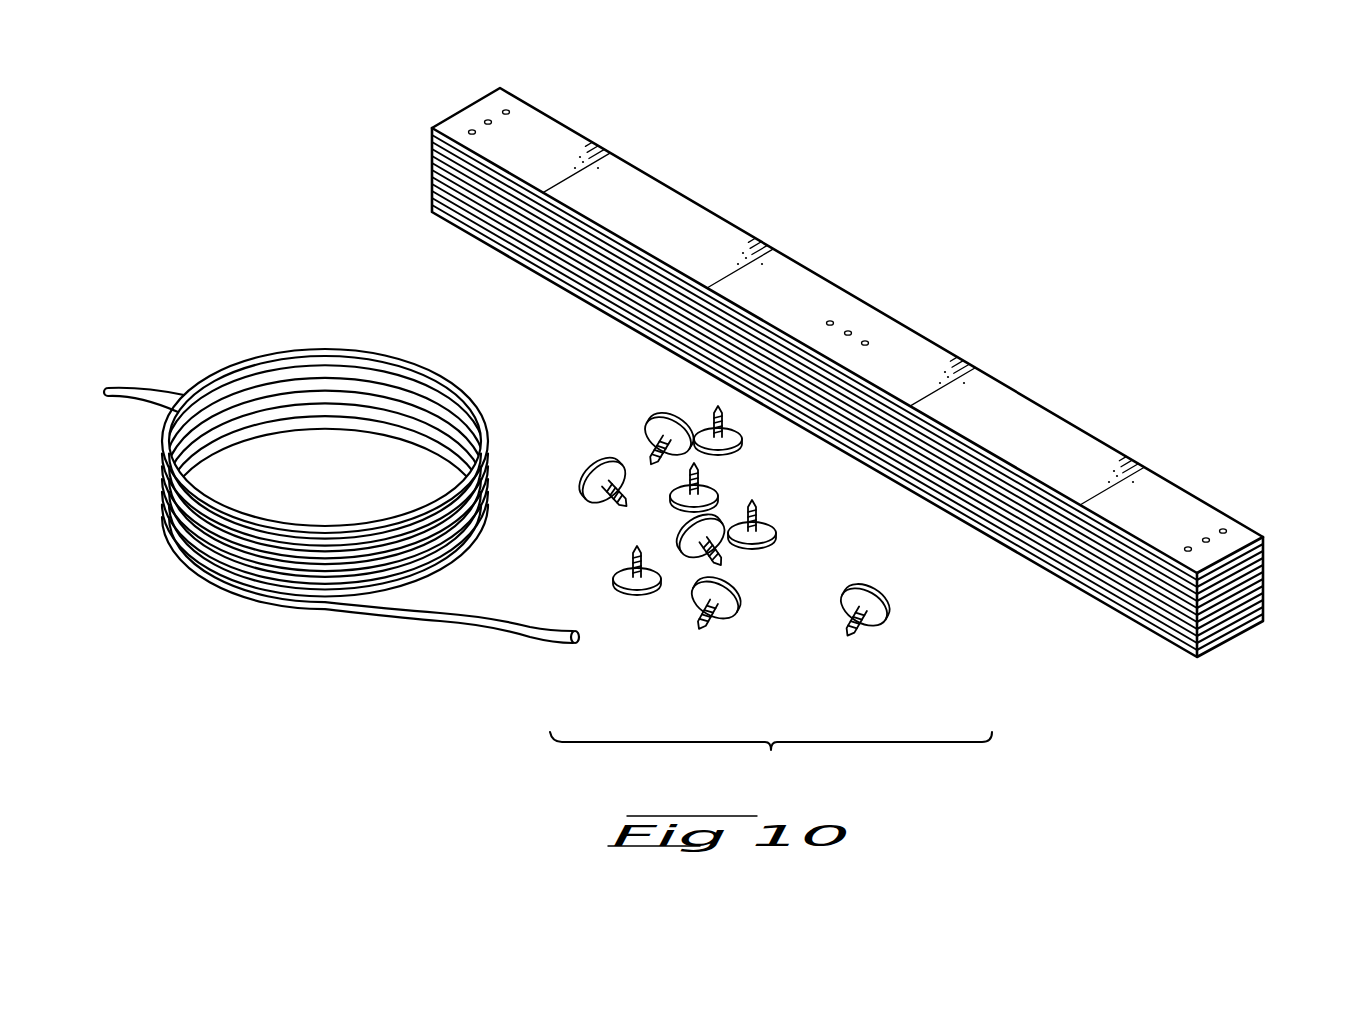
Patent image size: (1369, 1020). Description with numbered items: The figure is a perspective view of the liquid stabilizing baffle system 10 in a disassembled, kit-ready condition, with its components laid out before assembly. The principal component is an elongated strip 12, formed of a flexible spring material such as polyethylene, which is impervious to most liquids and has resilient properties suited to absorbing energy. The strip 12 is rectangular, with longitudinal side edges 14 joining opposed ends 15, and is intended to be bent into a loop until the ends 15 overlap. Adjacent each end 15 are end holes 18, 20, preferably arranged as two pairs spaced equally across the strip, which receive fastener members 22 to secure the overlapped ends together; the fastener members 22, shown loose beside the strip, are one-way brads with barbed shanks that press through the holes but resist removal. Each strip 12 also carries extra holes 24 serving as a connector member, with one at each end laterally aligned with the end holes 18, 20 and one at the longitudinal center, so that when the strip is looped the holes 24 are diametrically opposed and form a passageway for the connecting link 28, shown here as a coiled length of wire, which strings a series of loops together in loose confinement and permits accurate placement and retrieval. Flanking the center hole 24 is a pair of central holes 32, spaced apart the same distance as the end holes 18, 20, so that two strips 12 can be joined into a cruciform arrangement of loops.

The liquid stabilizing baffle system 10 is at (327, 218).
The elongated strip 12 is at (1270, 547).
The longitudinal side edges 14 is at (713, 215).
The opposed ends 15 is at (495, 103).
The end hole 18 is at (1188, 547).
The end hole 20 is at (506, 115).
The fastener members 22 is at (632, 563).
The extra hole 24 is at (488, 120).
The connecting link 28 is at (516, 643).
The central holes 32 is at (831, 321).